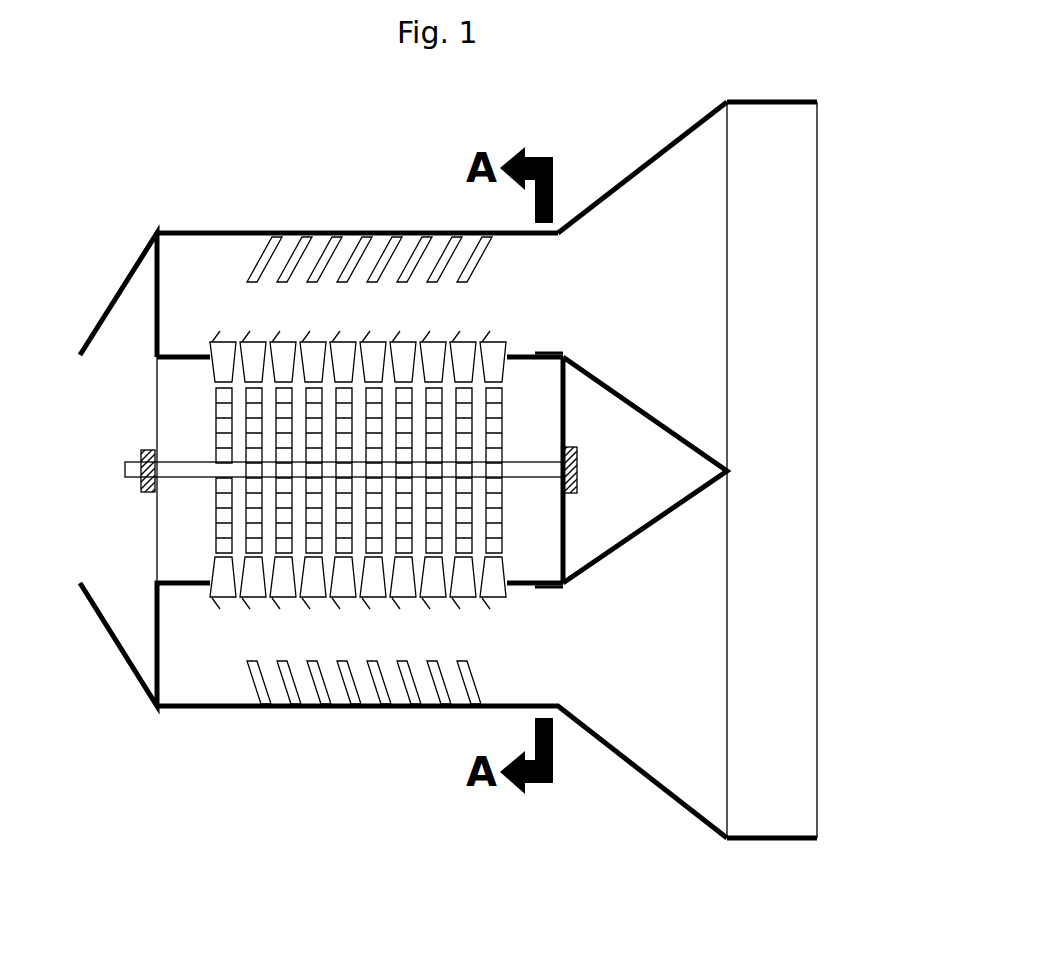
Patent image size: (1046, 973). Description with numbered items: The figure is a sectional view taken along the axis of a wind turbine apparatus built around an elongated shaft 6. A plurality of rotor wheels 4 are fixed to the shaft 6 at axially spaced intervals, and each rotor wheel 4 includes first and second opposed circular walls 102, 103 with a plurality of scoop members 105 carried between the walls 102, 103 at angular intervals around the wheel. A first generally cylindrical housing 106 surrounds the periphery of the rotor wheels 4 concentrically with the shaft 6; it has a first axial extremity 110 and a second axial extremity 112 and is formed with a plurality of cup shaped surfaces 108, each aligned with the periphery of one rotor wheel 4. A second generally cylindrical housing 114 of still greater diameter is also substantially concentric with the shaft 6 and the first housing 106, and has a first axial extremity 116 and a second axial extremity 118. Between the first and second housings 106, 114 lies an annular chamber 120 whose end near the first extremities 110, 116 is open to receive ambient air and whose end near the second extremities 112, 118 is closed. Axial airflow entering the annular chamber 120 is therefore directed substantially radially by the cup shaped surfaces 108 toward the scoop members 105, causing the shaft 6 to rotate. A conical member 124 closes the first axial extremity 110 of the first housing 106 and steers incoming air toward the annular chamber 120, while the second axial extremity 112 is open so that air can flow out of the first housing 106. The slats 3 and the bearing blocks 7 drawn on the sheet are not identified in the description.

The lower housing wall with inlet slats 3 is at (468, 685).
The rotor wheel 4 is at (405, 417).
The elongated shaft 6 is at (531, 470).
The shaft bearing 7 is at (147, 492).
The first circular wall 102 is at (217, 398).
The second circular wall 103 is at (230, 525).
The scoop member 105 is at (224, 441).
The first generally cylindrical housing 106 is at (527, 587).
The cup shaped surface 108 is at (490, 352).
The first axial extremity of first generally cylindrical housing 110 is at (565, 513).
The second axial extremity of first generally cylindrical housing 112 is at (158, 357).
The second generally cylindrical housing 114 is at (323, 232).
The first axial extremity of second generally cylindrical housing 116 is at (558, 232).
The second axial extremity of second generally cylindrical housing 118 is at (160, 232).
The annular chamber 120 is at (351, 455).
The conical member 124 is at (658, 412).